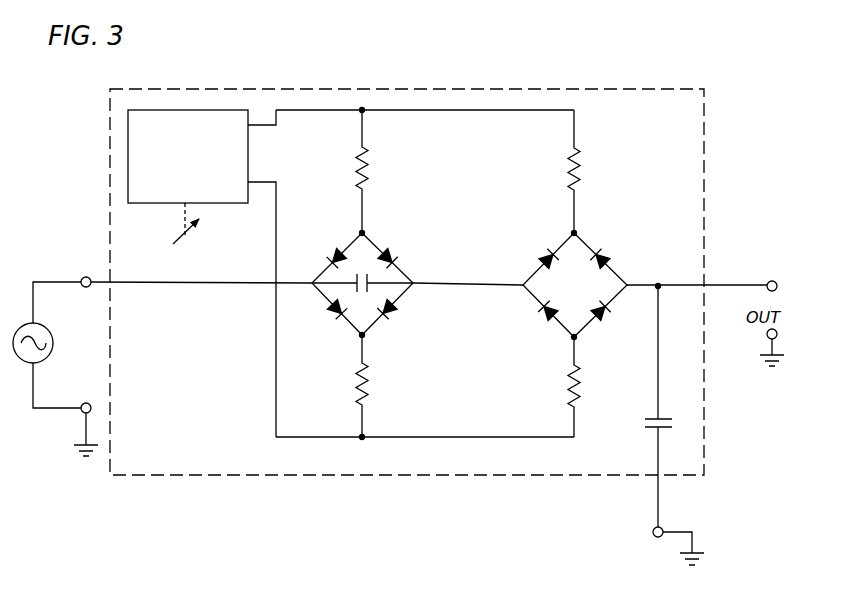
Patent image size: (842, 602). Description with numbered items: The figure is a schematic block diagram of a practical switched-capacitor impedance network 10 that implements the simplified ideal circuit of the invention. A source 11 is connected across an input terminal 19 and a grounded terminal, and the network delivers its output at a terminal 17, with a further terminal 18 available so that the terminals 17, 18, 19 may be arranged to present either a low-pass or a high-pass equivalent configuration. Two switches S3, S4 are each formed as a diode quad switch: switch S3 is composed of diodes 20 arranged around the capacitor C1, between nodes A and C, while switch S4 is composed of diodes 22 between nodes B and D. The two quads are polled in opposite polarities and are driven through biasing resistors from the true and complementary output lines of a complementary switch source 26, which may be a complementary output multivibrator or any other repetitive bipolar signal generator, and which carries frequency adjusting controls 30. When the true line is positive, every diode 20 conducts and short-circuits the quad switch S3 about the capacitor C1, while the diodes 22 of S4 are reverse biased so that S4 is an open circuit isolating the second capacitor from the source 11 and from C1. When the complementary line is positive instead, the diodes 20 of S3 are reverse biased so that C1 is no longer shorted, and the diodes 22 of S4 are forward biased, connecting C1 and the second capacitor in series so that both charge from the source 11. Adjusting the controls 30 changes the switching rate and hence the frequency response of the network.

The switching circuit enclosure 10 is at (283, 89).
The source 11 is at (52, 336).
The terminal 17 is at (776, 281).
The terminal 18 is at (668, 527).
The terminal 19 is at (86, 277).
The diodes 20 is at (399, 257).
The diodes 22 is at (562, 273).
The complementary switch source 26 is at (248, 156).
The frequency adjusting controls 30 is at (190, 230).
The switch S3 is at (396, 283).
The switch S4 is at (571, 270).
The capacitor C1 is at (360, 303).
The bridge node A is at (365, 231).
The bridge node B is at (577, 231).
The bridge node C is at (366, 338).
The bridge node D is at (577, 340).